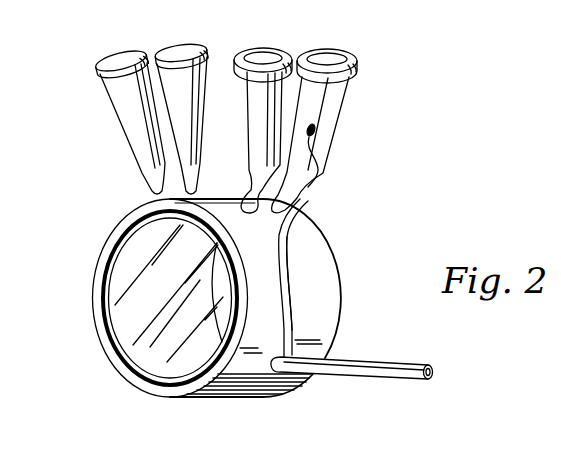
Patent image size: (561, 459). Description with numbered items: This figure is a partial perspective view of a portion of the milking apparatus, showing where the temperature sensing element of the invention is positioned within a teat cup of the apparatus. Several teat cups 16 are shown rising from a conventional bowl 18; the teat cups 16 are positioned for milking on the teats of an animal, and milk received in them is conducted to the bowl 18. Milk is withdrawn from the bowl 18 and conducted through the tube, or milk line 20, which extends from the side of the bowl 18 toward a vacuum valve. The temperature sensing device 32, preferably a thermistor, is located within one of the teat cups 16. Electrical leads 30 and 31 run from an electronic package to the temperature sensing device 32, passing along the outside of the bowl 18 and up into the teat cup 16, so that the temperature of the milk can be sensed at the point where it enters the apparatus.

The teat cup 16 is at (121, 121).
The bowl 18 is at (339, 302).
The milk line 20 is at (387, 378).
The electrical lead 30 is at (282, 262).
The electrical lead 31 is at (297, 267).
The temperature sensing device 32 is at (316, 128).